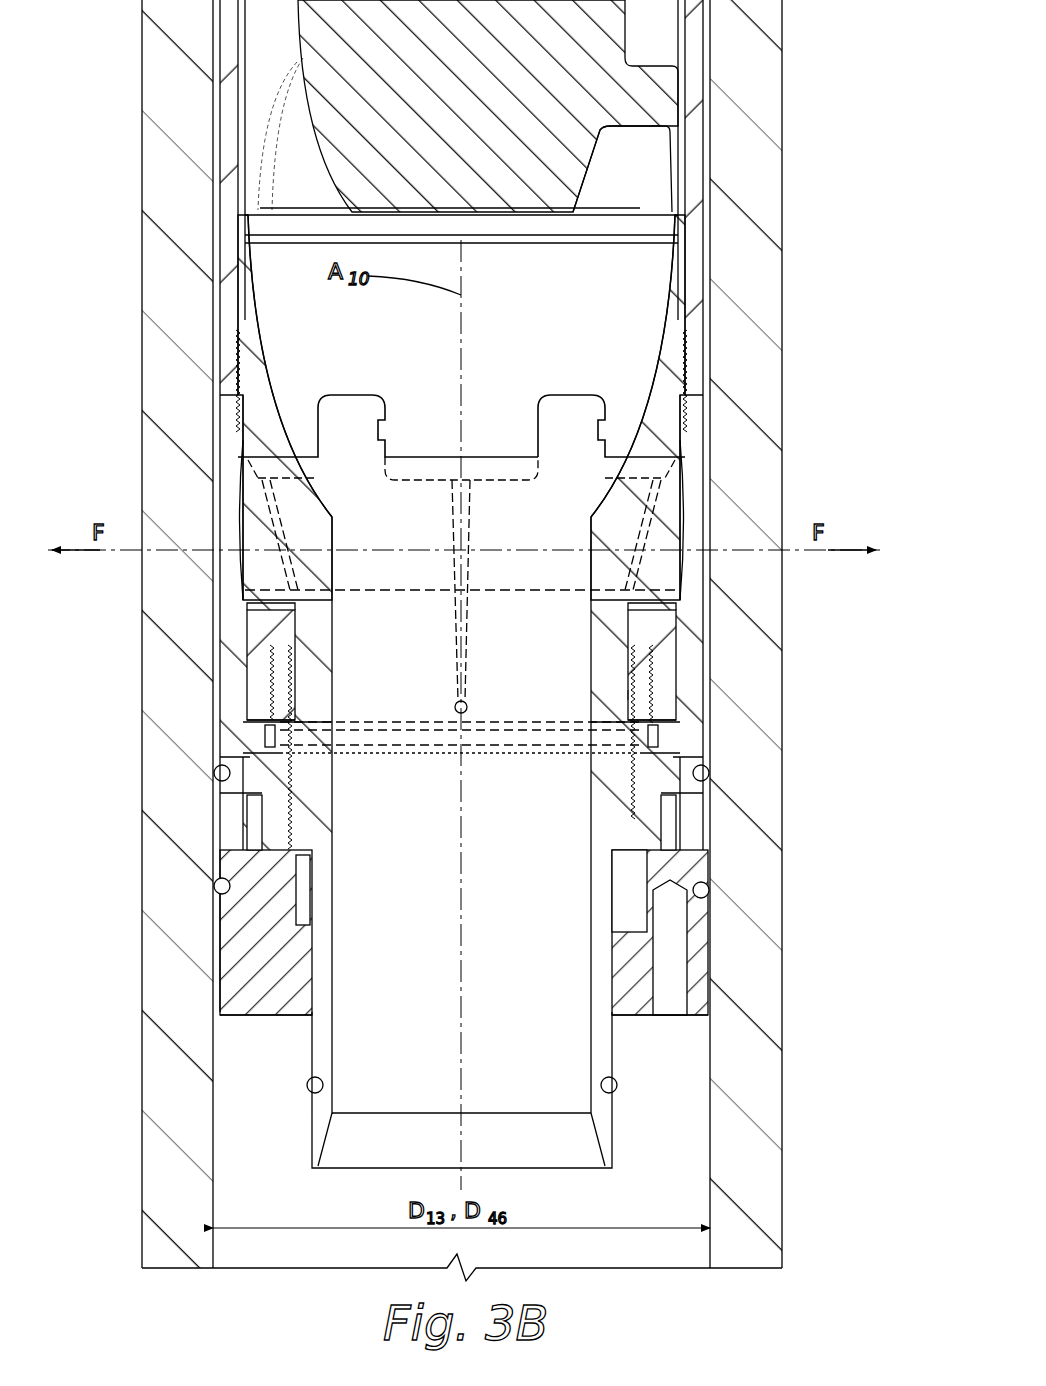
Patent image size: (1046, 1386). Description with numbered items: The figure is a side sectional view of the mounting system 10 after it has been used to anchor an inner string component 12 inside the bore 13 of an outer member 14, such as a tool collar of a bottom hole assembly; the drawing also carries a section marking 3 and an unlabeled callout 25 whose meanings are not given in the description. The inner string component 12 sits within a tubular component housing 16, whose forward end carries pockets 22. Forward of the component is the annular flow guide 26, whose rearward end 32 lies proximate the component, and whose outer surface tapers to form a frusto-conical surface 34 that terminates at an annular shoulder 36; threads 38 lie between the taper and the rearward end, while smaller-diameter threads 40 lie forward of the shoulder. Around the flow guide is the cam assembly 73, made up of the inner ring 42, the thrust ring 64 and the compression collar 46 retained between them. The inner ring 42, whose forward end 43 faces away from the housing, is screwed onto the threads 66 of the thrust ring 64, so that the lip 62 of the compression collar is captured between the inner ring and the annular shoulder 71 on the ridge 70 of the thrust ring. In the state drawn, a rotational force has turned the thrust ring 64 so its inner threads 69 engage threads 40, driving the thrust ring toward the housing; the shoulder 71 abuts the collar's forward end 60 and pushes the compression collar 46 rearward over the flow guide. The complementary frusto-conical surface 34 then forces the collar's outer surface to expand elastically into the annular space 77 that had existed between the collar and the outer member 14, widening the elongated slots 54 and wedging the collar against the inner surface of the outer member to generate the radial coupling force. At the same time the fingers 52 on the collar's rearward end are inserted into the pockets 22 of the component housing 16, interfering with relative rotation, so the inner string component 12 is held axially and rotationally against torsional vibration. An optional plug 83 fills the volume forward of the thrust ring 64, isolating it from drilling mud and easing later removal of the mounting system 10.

The upper body 3 is at (537, 407).
The mounting system 10 is at (285, 1117).
The inner string component 12 is at (562, 48).
The bore 13 is at (275, 1076).
The outer member 14 is at (782, 203).
The component housing 16 is at (693, 113).
The pockets 22 is at (383, 425).
The inner surface 25 is at (688, 358).
The flow guide 26 is at (615, 1044).
The rearward end 32 is at (622, 212).
The frusto-conical surface 34 is at (683, 570).
The annular shoulder 36 is at (645, 625).
The threads 38 is at (693, 372).
The threads 40 is at (653, 660).
The inner ring 42 is at (250, 678).
The forward end 43 is at (648, 725).
The compression collar 46 is at (218, 603).
The fingers 52 is at (560, 432).
The elongated slots 54 is at (452, 638).
The forward end 60 is at (708, 770).
The lip 62 is at (262, 735).
The thrust ring 64 is at (213, 793).
The threads 66 is at (640, 680).
The threads 69 is at (630, 690).
The ridge 70 is at (215, 758).
The annular shoulder 71 is at (652, 748).
The cam assembly 73 is at (690, 836).
The annular space 77 is at (220, 695).
The plug 83 is at (250, 958).